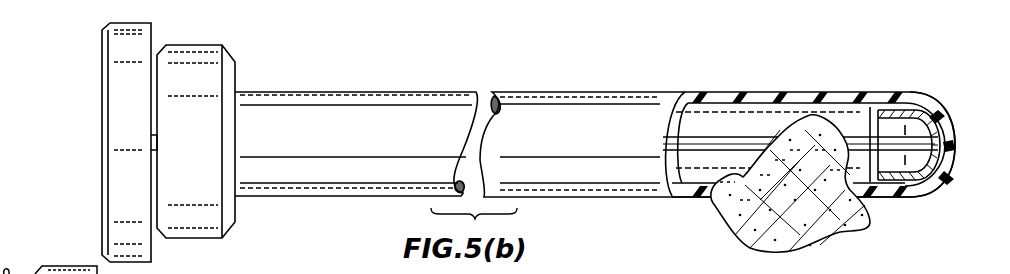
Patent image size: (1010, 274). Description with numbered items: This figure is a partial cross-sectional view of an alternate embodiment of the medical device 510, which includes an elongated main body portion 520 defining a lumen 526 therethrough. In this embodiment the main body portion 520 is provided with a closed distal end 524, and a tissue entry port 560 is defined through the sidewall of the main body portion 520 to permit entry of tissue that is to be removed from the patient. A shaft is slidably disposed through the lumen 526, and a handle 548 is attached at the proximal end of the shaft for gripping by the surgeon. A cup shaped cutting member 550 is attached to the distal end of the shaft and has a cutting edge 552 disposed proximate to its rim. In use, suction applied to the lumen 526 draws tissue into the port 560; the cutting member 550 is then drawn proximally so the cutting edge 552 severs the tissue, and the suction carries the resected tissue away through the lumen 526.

The handle 548 is at (114, 124).
The main body portion 520 is at (287, 172).
The medical device 510 is at (652, 79).
The lumen 526 is at (700, 131).
The cutting edge 552 is at (858, 117).
The distal end 524 is at (961, 112).
The cup shaped cutting member 550 is at (916, 199).
The tissue entry port 560 is at (716, 190).